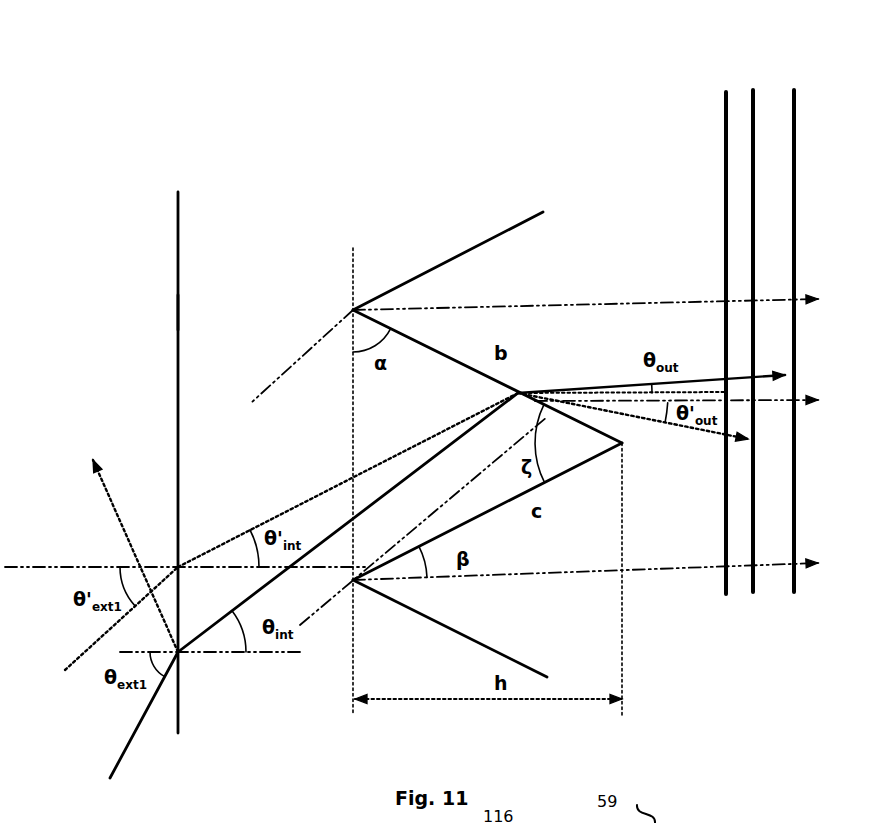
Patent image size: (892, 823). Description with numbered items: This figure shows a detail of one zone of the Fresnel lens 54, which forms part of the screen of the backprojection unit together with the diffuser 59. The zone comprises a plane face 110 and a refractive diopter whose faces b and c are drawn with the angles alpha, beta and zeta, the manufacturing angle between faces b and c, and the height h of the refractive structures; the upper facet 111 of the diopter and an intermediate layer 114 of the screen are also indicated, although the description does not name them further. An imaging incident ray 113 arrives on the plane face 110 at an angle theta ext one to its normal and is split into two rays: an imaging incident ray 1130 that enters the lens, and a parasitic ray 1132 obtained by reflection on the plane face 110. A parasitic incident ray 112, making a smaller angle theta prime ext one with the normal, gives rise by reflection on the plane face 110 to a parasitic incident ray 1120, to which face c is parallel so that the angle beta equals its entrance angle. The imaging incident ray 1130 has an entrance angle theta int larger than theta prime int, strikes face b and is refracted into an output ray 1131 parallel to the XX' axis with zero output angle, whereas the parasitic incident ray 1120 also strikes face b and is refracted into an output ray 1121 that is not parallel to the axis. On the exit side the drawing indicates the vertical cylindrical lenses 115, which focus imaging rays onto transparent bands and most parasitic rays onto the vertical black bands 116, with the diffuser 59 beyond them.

The Fresnel lens 54 is at (212, 308).
The diffuser 59 is at (792, 90).
The plane face 110 is at (178, 218).
The prism facet 111 is at (495, 238).
The parasitic incident ray 112 is at (80, 665).
The imaging incident ray 113 is at (128, 748).
The optical layer 114 is at (754, 510).
The vertical cylindrical lenses 115 is at (726, 140).
The black bands 116 is at (752, 92).
The parasitic incident ray 1120 is at (297, 507).
The output ray 1121 is at (685, 445).
The imaging incident ray 1130 is at (197, 647).
The output ray 1131 is at (600, 387).
The parasitic ray 1132 is at (120, 523).